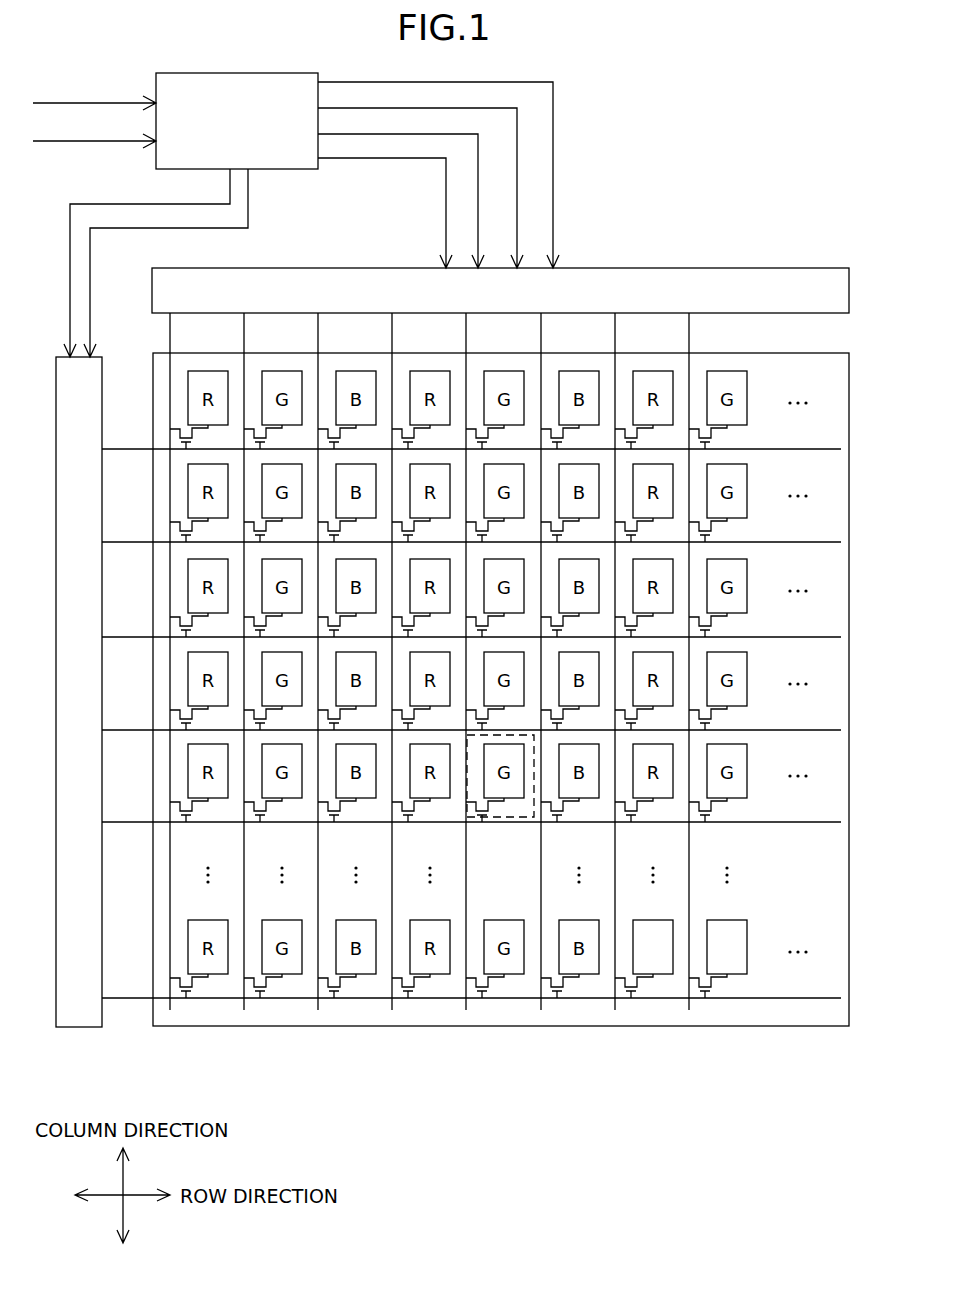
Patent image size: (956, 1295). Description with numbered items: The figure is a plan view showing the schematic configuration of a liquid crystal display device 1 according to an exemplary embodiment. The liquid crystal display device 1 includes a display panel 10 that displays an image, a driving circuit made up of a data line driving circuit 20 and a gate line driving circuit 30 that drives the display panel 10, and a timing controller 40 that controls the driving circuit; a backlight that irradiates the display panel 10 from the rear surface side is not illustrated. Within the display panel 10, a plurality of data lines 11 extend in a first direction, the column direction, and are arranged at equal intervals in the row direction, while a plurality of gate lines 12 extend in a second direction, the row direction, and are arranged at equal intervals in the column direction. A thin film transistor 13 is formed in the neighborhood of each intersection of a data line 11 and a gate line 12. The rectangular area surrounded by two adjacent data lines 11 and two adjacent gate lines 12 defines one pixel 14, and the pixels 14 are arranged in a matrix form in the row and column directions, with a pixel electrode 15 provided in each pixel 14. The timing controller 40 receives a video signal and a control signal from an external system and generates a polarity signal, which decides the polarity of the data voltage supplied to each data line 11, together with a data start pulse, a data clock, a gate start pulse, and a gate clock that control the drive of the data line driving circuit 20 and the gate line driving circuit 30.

The liquid crystal display device 1 is at (781, 79).
The display panel 10 is at (276, 1027).
The data line 11 is at (689, 333).
The gate line 12 is at (123, 822).
The thin film transistor 13 is at (731, 993).
The pixel 14 is at (498, 822).
The pixel electrode 15 is at (660, 975).
The data line driving circuit 20 is at (760, 268).
The gate line driving circuit 30 is at (95, 356).
The timing controller 40 is at (267, 73).